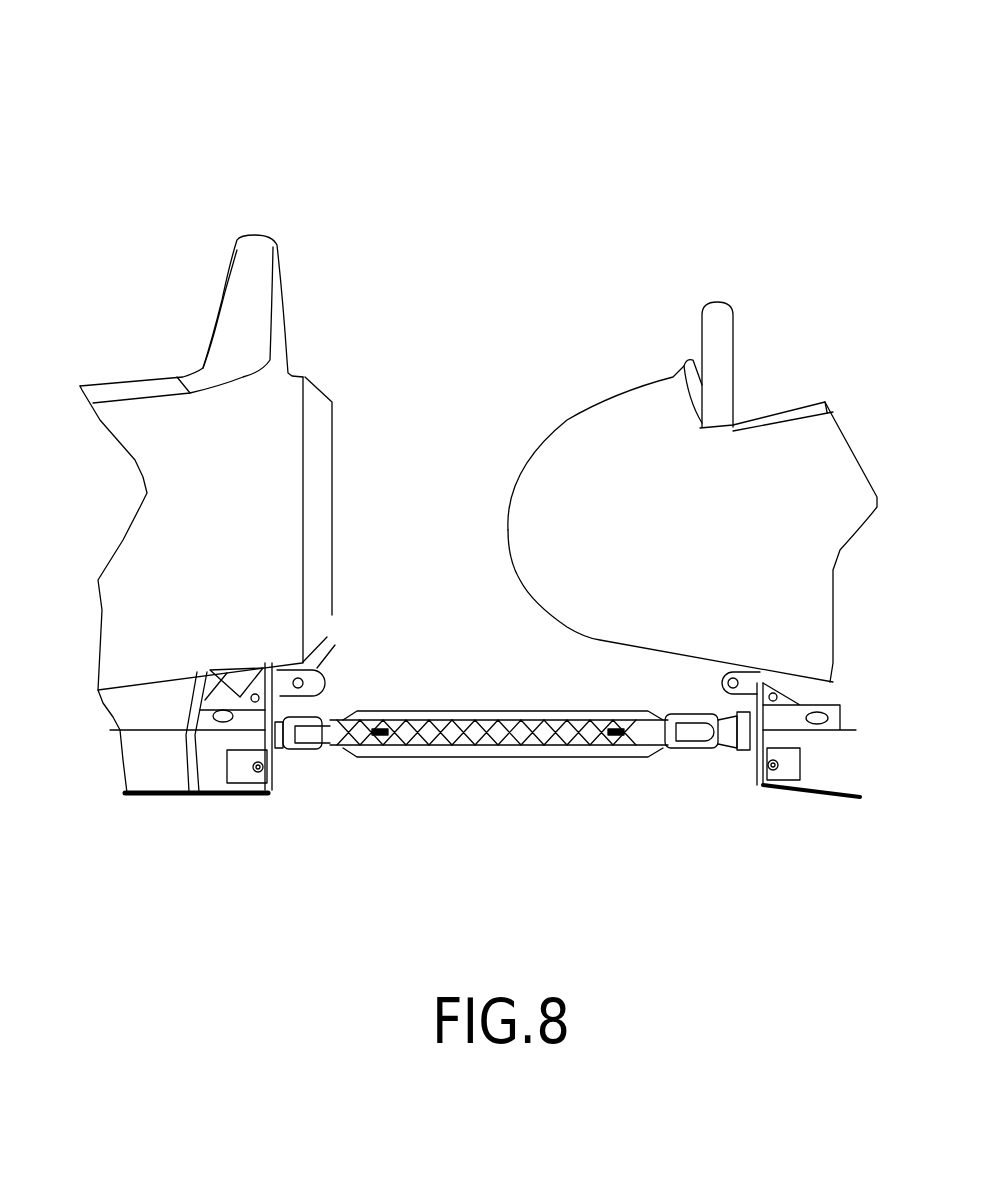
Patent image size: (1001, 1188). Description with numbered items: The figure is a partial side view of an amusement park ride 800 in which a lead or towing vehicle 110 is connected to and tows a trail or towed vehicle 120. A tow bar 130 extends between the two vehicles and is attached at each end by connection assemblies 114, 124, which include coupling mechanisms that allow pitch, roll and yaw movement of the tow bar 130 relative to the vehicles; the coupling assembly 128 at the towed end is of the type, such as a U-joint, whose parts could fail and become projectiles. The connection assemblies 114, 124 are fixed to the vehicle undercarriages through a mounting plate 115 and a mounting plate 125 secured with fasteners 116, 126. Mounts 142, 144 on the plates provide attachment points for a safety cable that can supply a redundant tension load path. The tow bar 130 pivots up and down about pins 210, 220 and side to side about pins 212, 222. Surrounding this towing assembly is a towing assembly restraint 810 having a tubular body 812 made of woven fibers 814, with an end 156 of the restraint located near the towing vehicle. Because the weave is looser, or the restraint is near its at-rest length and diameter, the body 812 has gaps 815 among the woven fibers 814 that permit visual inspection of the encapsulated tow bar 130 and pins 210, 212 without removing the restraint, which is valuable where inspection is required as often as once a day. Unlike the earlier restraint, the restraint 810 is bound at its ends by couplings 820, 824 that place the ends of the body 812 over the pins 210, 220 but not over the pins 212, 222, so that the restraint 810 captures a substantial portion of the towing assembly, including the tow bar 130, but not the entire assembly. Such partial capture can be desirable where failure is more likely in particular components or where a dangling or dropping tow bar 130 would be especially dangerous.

The amusement park ride 800 is at (113, 98).
The towing vehicle 110 is at (153, 380).
The towed vehicle 120 is at (597, 410).
The towing assembly restraint 810 is at (437, 578).
The tow bar 130 is at (502, 758).
The tubular body 812 is at (421, 713).
The woven fibers 814 is at (523, 714).
The gaps 815 is at (593, 714).
The pin 210 is at (345, 712).
The pin 212 is at (303, 753).
The pin 220 is at (645, 752).
The pin 222 is at (690, 708).
The connection assembly 114 is at (314, 772).
The mounting plate 115 is at (273, 788).
The fasteners 116 is at (205, 785).
The connection assembly 124 is at (708, 772).
The mounting plate 125 is at (757, 785).
The fasteners 126 is at (780, 790).
The coupling assembly 128 is at (667, 770).
The mount 142 is at (332, 640).
The mount 144 is at (740, 673).
The end of restraint 156 is at (270, 667).
The coupling 820 is at (332, 770).
The coupling 824 is at (693, 753).